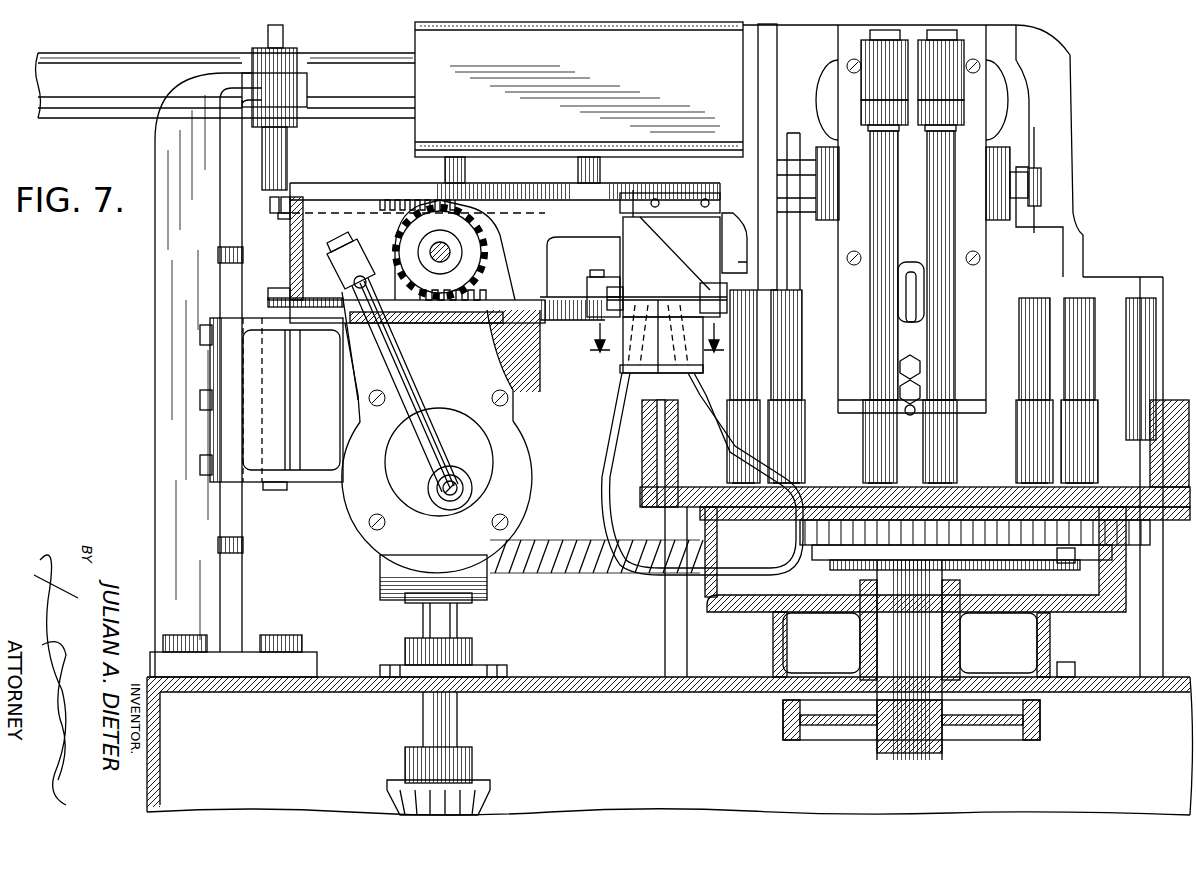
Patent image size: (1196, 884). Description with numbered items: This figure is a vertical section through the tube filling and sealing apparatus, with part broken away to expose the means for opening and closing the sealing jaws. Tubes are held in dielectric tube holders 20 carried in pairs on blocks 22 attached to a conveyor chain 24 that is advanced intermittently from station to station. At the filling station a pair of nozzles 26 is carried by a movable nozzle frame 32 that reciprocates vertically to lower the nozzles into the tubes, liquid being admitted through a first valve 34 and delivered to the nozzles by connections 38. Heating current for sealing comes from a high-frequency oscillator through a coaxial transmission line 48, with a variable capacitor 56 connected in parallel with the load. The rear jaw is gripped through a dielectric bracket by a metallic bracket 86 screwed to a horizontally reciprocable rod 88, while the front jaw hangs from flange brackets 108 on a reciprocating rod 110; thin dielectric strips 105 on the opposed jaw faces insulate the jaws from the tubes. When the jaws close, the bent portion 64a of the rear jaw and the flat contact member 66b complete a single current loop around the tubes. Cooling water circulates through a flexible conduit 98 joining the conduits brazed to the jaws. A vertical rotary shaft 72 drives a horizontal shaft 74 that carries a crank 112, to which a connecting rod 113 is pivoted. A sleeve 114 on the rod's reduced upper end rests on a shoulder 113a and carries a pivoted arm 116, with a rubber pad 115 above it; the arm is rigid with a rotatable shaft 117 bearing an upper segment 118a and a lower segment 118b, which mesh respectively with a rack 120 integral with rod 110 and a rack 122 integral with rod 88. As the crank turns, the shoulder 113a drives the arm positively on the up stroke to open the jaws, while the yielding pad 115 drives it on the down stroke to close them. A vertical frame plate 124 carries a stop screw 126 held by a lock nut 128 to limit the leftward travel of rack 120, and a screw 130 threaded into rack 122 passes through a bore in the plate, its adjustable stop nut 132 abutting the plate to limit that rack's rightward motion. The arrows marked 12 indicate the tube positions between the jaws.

The coaxial transmission line 48 is at (340, 48).
The variable capacitor 56 is at (443, 121).
The rack 120 is at (408, 173).
The vertical frame plate 124 is at (290, 247).
The stop screw 126 is at (272, 208).
The lock nut 128 is at (284, 219).
The adjustable stop nut 132 is at (284, 290).
The screw 130 is at (323, 308).
The rack 122 is at (462, 323).
The arm 116 is at (368, 245).
The rubber pad 115 is at (333, 246).
The sleeve 114 is at (352, 283).
The connecting rod 113 is at (410, 379).
The shoulder 113a is at (350, 362).
The rotatable shaft 117 is at (468, 250).
The upper segment 118a is at (452, 224).
The lower segment 118b is at (502, 290).
The horizontally reciprocable rod 88 is at (563, 322).
The crank 112 is at (458, 510).
The horizontal shaft 74 is at (455, 466).
The reciprocating rod 110 is at (691, 213).
The flange bracket 108 is at (713, 266).
The metallic bracket 86 is at (586, 292).
The dielectric strip 105 is at (655, 296).
The workpiece direction 12 is at (655, 351).
The bent portion of rear jaw 64a is at (621, 380).
The flat contact member 66b is at (707, 384).
The flexible conduit 98 is at (608, 460).
The tube holder 20 is at (863, 450).
The block 22 is at (640, 502).
The conveyor chain 24 is at (1068, 545).
The vertical rotary shaft 72 is at (448, 715).
The connection 38 is at (865, 54).
The nozzle 26 is at (868, 273).
The movable nozzle frame 32 is at (912, 152).
The first valve 34 is at (1003, 166).